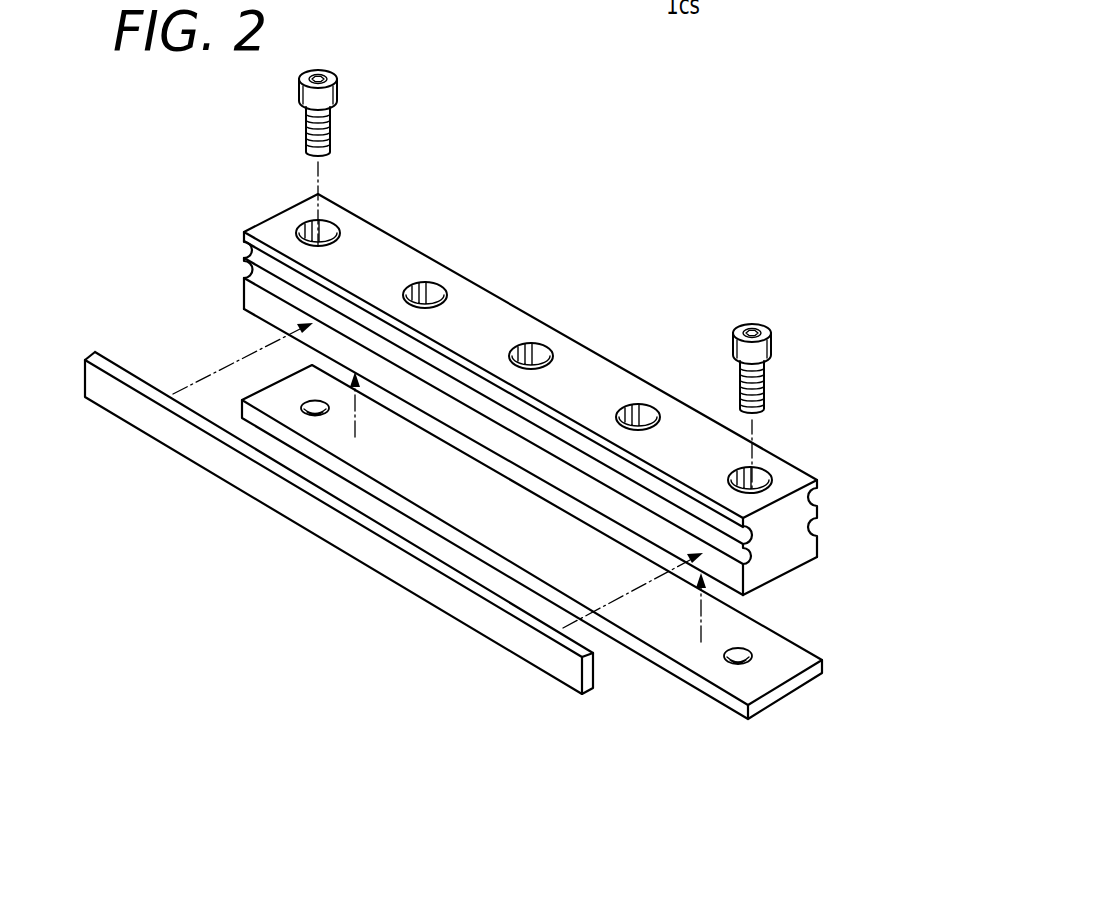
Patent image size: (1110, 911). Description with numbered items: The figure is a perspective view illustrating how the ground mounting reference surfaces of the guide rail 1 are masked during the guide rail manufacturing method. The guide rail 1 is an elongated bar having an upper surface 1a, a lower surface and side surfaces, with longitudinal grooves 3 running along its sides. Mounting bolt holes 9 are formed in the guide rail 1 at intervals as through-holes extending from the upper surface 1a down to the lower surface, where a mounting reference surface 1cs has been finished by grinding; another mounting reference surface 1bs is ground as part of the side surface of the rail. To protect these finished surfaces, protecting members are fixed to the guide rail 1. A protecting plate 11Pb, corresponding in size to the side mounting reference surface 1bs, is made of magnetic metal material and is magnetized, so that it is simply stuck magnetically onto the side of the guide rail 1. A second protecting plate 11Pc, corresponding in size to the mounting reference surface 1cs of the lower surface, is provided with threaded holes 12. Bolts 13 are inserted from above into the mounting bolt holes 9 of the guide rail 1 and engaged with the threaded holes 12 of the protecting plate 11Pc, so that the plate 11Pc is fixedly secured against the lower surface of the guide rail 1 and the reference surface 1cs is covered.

The guide rail 1 is at (274, 212).
The upper surface 1a is at (508, 320).
The mounting reference surface 1bs is at (265, 307).
The mounting reference surface 1cs is at (783, 588).
The rolling grooves 3 is at (247, 273).
The mounting bolt holes 9 is at (437, 290).
The bolts 13 is at (772, 343).
The protecting plate 11Pb is at (555, 666).
The protecting plate 11Pc is at (728, 703).
The threaded holes 12 is at (753, 657).